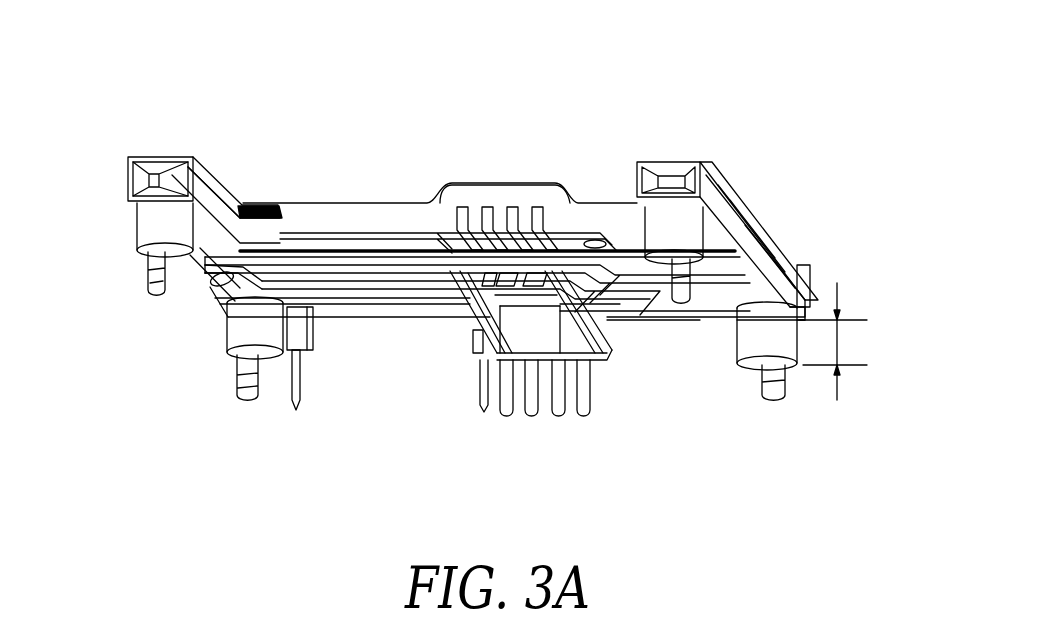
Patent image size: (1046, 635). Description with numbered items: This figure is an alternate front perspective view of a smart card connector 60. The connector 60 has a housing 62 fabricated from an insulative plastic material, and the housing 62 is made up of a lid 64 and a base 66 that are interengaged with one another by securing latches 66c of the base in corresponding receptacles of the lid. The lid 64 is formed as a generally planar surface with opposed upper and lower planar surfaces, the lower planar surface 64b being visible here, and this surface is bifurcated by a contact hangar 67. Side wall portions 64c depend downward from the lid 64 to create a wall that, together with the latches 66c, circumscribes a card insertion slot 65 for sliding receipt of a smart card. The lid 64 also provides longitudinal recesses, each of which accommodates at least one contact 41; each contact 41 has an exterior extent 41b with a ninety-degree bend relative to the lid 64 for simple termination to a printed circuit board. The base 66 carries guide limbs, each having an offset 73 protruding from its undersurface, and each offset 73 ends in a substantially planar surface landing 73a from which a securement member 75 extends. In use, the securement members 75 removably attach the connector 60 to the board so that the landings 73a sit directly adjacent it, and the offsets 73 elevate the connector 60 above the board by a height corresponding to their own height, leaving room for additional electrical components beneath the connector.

The smart card connector 60 is at (703, 103).
The housing 62 is at (808, 295).
The lid 64 is at (745, 216).
The lower planar surface 64b is at (240, 212).
The side wall portions 64c is at (770, 250).
The card insertion slot 65 is at (345, 246).
The base 66 is at (127, 186).
The latches 66c is at (718, 186).
The contact hangar 67 is at (460, 180).
The offset 73 is at (150, 235).
The surface landing 73a is at (187, 270).
The securement member 75 is at (147, 300).
The contact 41 is at (507, 407).
The exterior extent 41b is at (587, 400).